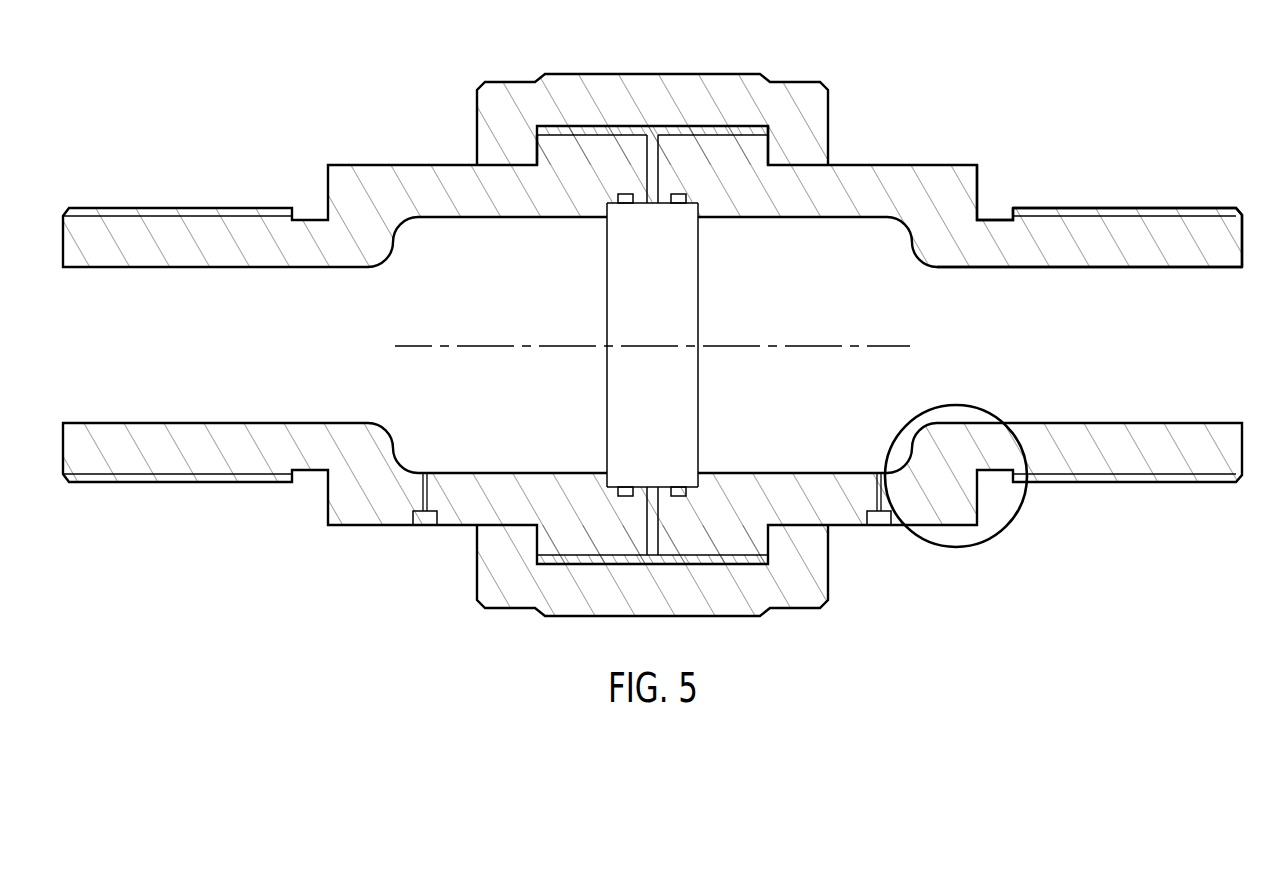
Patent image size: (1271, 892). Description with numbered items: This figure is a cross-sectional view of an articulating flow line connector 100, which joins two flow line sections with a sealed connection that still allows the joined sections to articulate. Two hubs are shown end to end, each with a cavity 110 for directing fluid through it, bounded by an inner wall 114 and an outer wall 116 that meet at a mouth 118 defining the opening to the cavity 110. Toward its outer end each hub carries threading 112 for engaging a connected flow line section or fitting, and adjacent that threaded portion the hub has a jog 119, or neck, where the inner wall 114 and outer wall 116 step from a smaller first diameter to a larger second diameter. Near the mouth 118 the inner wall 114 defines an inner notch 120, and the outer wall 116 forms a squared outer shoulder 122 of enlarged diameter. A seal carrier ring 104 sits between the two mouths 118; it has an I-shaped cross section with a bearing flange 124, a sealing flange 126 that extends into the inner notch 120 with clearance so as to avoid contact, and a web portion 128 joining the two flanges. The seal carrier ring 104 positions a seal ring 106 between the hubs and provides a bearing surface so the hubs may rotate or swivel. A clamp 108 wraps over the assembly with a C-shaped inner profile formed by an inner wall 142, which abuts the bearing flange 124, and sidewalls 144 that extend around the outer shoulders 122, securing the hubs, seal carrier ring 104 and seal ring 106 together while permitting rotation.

The articulating flow line connector 100 is at (1113, 68).
The seal carrier ring 104 is at (653, 124).
The seal ring 106 is at (679, 194).
The clamp 108 is at (508, 82).
The cavity 110 is at (1027, 358).
The threading 112 is at (1122, 208).
The inner wall 114 is at (1093, 268).
The outer wall 116 is at (1000, 221).
The mouth 118 is at (646, 164).
The jog 119 is at (956, 548).
The inner notch 120 is at (605, 207).
The outer shoulder 122 is at (570, 137).
The bearing flange 124 is at (587, 128).
The sealing flange 126 is at (652, 208).
The web portion 128 is at (650, 158).
The inner wall of clamp 142 is at (722, 128).
The sidewall 144 is at (770, 150).